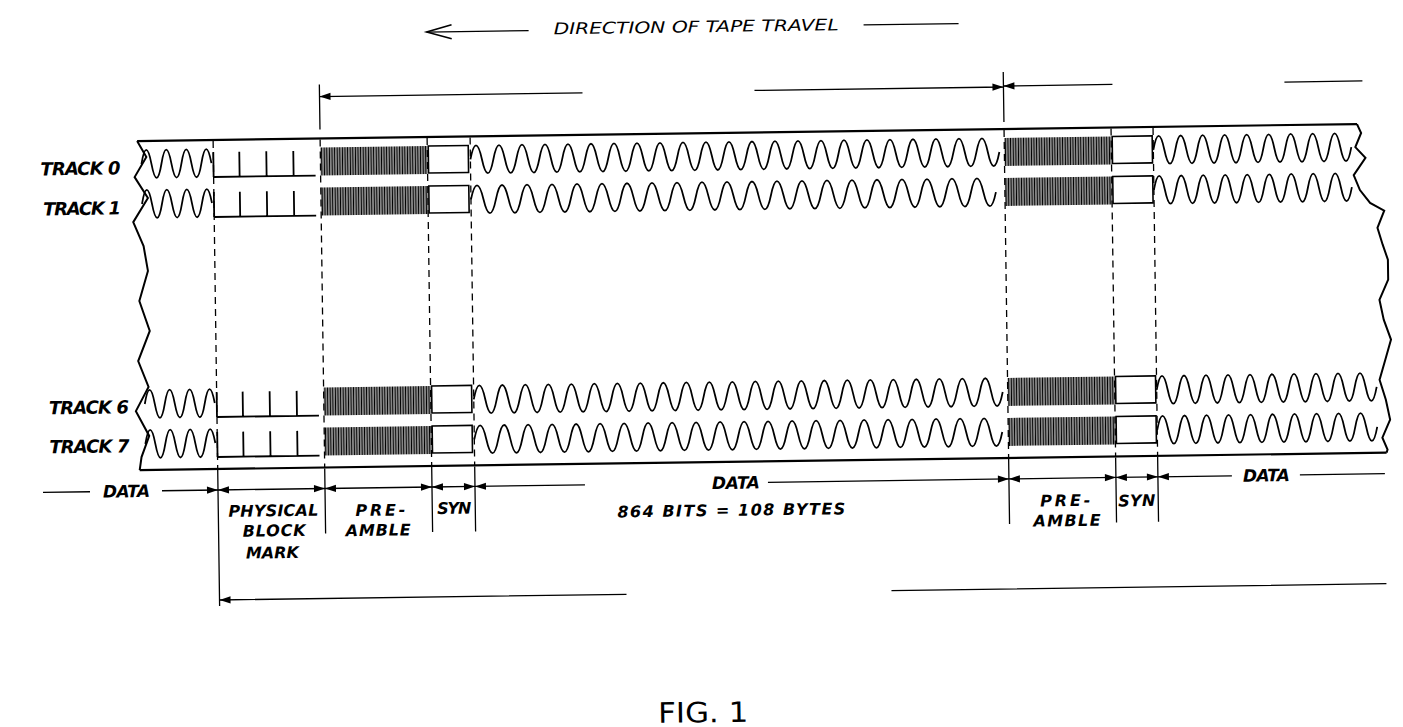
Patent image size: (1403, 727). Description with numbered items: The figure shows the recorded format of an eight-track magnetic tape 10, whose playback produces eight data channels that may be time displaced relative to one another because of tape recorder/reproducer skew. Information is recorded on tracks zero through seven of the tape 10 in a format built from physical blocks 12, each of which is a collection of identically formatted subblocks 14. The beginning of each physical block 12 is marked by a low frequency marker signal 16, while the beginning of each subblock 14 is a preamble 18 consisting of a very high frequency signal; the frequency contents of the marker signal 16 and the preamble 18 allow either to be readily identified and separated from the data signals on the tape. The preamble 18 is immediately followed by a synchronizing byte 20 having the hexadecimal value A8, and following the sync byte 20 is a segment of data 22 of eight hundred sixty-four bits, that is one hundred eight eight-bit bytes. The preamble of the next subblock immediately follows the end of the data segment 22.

The magnetic tape 10 is at (172, 142).
The physical block 12 is at (487, 600).
The subblock 14 is at (665, 76).
The marker signal 16 is at (272, 192).
The preamble 18 is at (410, 220).
The synchronizing (sync) byte 20 is at (473, 218).
The data segment 22 is at (858, 200).